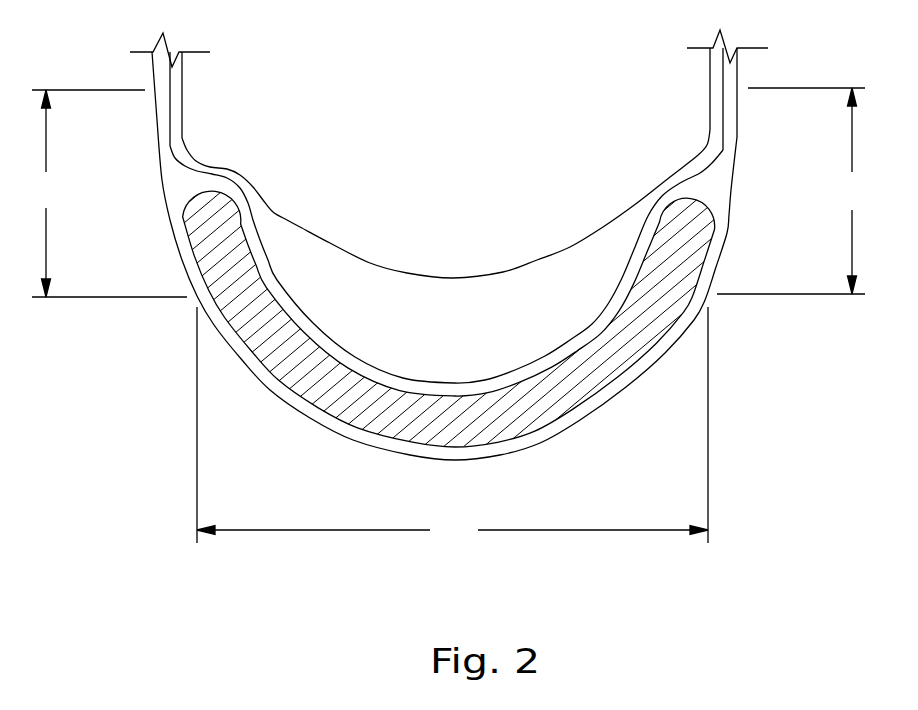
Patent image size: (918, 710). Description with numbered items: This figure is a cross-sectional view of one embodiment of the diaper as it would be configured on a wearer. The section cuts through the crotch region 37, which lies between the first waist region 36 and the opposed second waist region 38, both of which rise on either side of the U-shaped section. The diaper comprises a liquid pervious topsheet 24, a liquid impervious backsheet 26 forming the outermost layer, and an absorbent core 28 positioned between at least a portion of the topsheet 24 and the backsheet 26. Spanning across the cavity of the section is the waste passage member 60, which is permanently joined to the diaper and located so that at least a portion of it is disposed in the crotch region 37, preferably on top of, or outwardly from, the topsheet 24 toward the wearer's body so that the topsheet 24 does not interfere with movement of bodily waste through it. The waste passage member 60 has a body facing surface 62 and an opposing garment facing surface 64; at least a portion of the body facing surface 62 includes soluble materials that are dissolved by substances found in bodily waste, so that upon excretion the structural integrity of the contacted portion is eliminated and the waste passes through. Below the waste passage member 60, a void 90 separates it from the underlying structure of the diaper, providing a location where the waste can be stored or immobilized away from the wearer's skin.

The topsheet 24 is at (721, 148).
The backsheet 26 is at (540, 447).
The absorbent core 28 is at (593, 375).
The first waist region 36 is at (107, 193).
The crotch region 37 is at (452, 426).
The second waist region 38 is at (791, 191).
The waste passage member 60 is at (297, 222).
The body facing surface 62 is at (570, 247).
The garment facing surface 64 is at (510, 276).
The void 90 is at (366, 285).